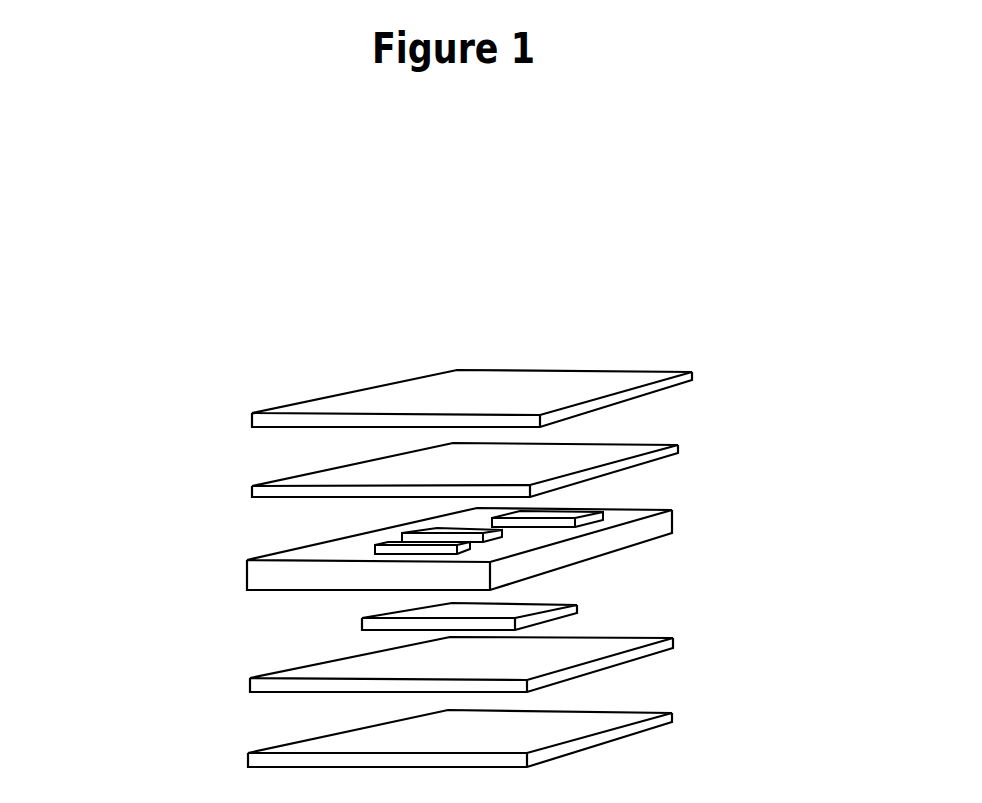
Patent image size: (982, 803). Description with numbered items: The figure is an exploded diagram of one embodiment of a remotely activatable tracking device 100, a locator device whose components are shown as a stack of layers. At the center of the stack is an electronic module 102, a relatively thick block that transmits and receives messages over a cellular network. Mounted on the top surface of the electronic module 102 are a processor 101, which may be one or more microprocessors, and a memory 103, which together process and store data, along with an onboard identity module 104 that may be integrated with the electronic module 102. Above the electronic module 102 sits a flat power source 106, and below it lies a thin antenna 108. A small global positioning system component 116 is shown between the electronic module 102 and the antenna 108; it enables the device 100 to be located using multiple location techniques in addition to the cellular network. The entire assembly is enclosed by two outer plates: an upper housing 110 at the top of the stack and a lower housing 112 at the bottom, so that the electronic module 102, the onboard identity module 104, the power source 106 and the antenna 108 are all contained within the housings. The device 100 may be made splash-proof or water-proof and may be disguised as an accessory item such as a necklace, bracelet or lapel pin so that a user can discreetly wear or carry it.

The remotely activatable tracking device 100 is at (180, 290).
The processor 101 is at (402, 533).
The electronic module 102 is at (650, 532).
The memory 103 is at (375, 548).
The onboard identity module 104 is at (580, 519).
The power source 106 is at (607, 448).
The antenna 108 is at (603, 643).
The upper housing 110 is at (573, 370).
The lower housing 112 is at (623, 715).
The global positioning system component 116 is at (383, 623).